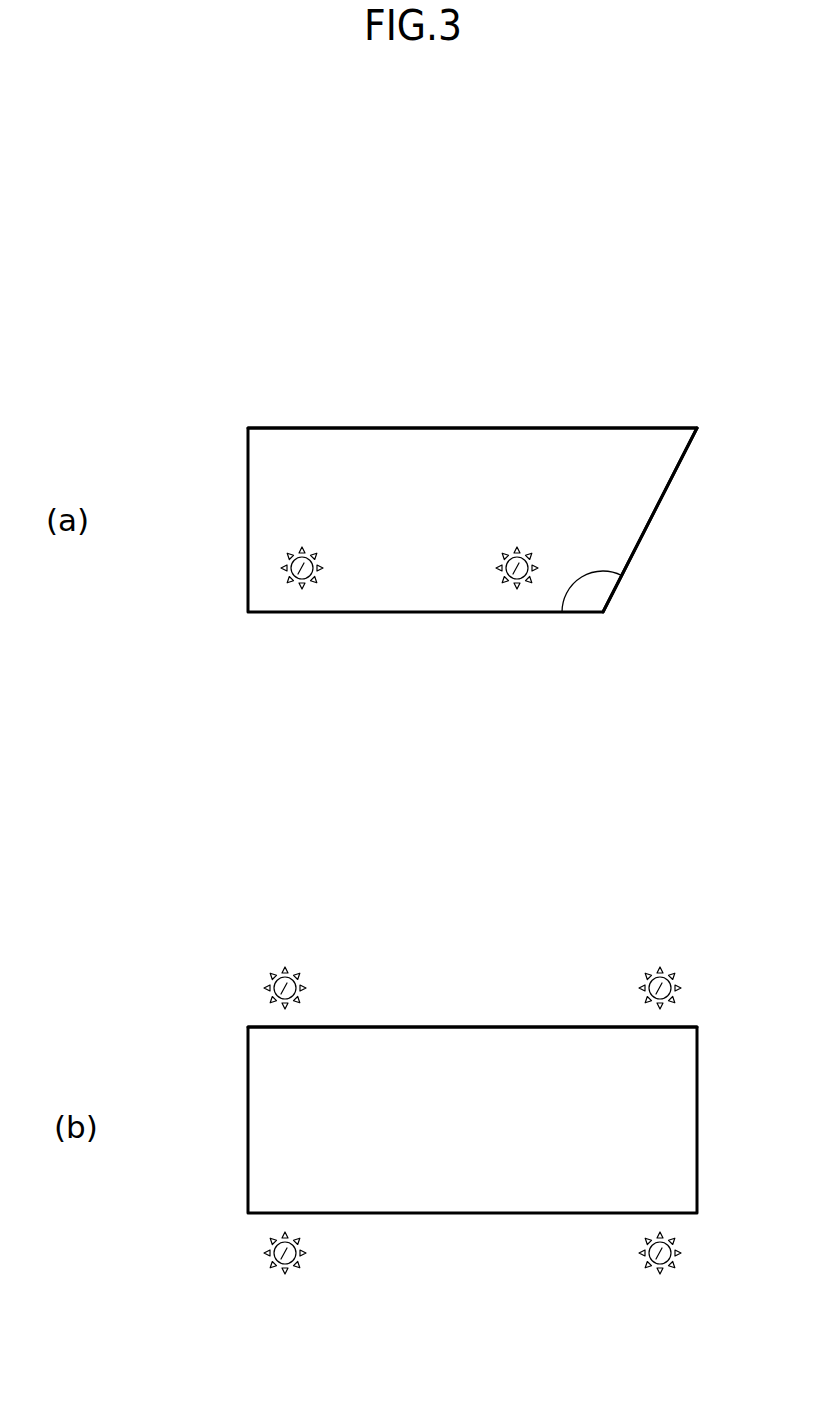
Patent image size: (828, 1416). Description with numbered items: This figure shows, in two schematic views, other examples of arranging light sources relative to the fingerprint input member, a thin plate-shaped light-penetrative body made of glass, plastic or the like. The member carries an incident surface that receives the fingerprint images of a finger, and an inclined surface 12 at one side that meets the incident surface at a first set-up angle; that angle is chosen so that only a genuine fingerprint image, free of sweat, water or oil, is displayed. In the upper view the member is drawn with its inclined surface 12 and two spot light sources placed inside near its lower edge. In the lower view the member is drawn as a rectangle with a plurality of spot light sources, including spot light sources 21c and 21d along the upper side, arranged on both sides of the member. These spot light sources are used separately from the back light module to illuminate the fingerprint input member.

The inclined surface 12 is at (650, 520).
The spot light source 21c is at (290, 970).
The spot light source 21d is at (653, 971).